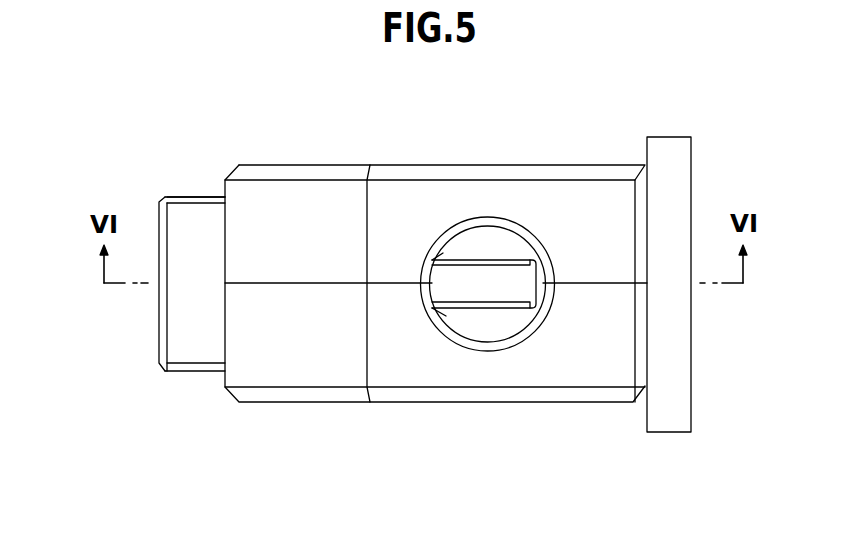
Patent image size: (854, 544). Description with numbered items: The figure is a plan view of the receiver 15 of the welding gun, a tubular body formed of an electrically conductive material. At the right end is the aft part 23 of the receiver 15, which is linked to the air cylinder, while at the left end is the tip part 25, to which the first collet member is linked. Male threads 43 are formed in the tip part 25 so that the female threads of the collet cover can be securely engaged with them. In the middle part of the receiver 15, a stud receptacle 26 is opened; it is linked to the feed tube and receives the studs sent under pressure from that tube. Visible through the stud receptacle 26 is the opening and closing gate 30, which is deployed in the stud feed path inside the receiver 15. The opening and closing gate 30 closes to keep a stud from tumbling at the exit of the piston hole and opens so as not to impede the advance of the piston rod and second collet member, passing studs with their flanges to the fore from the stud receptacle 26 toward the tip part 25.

The receiver 15 is at (523, 148).
The aft part 23 is at (682, 188).
The tip part 25 is at (185, 212).
The stud receptacle 26 is at (480, 225).
The opening and closing gate 30 is at (482, 287).
The male threads 43 is at (200, 198).